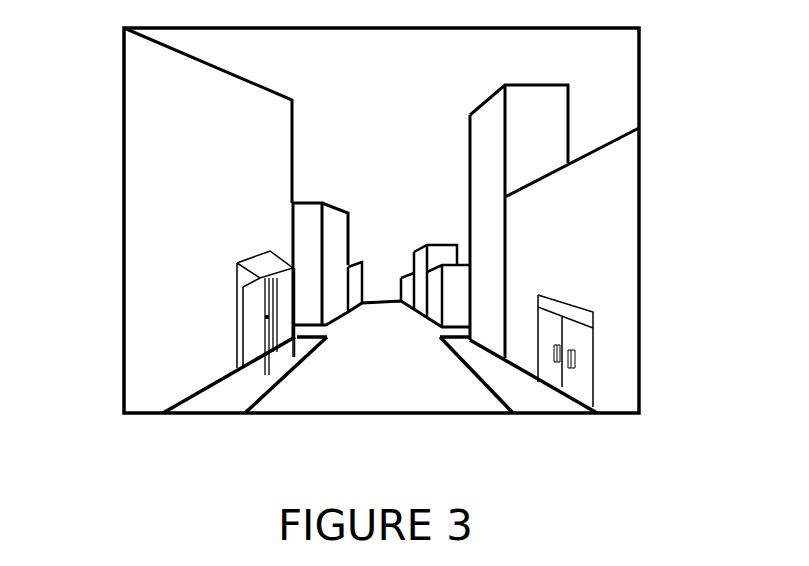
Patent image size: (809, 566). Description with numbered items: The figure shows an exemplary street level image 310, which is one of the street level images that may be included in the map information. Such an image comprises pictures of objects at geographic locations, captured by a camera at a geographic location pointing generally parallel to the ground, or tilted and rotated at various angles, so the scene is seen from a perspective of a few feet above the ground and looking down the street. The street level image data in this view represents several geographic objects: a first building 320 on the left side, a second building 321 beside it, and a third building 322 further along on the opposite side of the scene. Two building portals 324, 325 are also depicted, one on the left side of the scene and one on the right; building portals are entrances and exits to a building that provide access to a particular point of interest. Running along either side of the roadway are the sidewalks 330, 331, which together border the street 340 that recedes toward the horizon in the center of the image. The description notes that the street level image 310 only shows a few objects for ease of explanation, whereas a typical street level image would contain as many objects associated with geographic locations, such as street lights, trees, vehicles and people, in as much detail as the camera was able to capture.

The street level image 310 is at (667, 213).
The building 320 is at (190, 124).
The building 321 is at (333, 240).
The building 322 is at (352, 293).
The building portal 324 is at (237, 350).
The building portal 325 is at (573, 363).
The sidewalk 330 is at (535, 397).
The sidewalk 331 is at (237, 368).
The street 340 is at (422, 383).